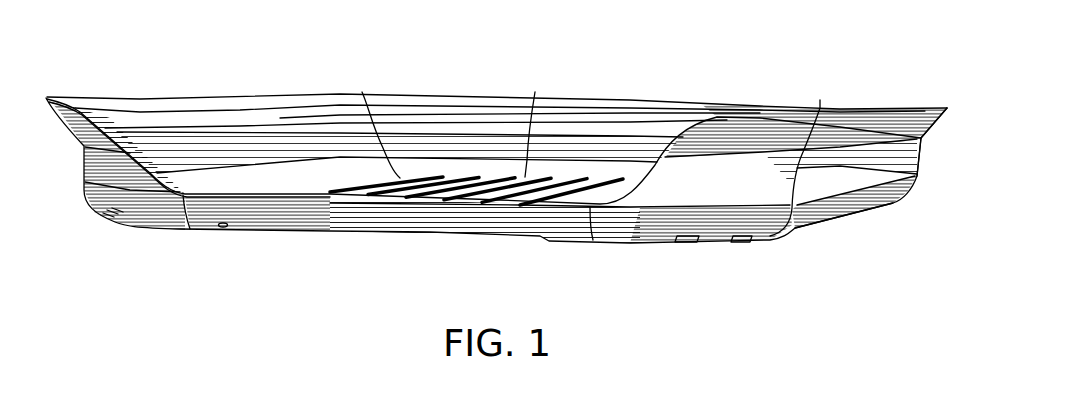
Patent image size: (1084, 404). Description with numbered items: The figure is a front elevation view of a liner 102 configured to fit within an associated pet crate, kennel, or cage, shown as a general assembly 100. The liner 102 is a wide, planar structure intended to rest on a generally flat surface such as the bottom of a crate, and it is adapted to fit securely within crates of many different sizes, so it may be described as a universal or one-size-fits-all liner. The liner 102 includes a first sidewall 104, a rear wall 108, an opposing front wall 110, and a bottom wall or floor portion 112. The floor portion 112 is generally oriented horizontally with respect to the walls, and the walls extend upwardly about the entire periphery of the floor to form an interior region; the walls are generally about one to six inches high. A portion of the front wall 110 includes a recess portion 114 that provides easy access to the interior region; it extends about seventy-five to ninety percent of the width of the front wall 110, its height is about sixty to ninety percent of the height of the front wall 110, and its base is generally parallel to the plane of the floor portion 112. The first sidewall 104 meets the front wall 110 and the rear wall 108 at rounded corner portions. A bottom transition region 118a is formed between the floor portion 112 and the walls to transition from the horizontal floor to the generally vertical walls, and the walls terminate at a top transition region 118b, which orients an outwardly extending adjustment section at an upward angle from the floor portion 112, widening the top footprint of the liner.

The cargo bed assembly 100 is at (122, 25).
The liner 102 is at (410, 75).
The first sidewall 104 is at (814, 182).
The rear wall 108 is at (677, 107).
The front wall 110 is at (212, 212).
The floor portion 112 is at (370, 228).
The recess portion 114 is at (592, 200).
The bottom transition region 118a is at (867, 197).
The top transition region 118b is at (921, 138).